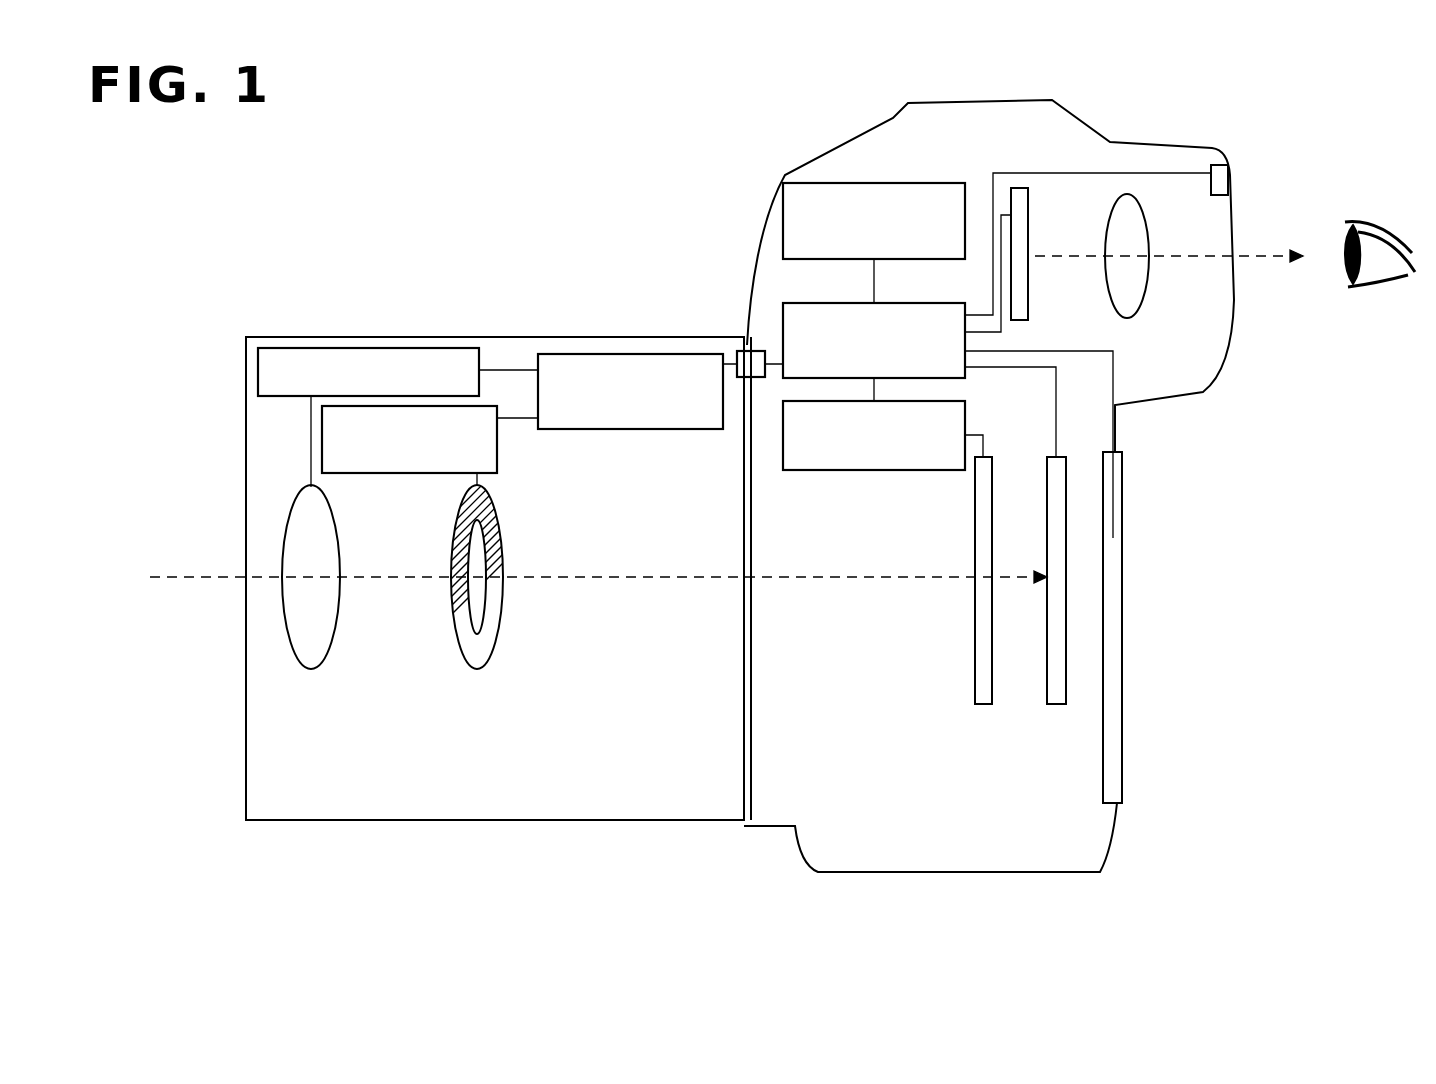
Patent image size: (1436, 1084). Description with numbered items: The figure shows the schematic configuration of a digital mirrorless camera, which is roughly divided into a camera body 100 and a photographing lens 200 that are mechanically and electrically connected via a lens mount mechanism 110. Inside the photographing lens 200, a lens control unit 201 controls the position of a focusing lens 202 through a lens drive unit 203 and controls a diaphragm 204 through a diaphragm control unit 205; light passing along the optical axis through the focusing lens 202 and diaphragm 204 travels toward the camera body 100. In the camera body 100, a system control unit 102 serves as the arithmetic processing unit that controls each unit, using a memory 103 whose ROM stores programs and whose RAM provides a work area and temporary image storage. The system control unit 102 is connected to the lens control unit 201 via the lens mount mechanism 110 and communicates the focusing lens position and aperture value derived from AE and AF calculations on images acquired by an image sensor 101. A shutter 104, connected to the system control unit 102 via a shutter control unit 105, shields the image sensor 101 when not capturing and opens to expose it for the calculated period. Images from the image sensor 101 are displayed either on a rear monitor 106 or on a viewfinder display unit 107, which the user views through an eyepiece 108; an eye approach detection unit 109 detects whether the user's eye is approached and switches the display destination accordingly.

The camera body 100 is at (750, 873).
The image sensor 101 is at (1055, 704).
The system control unit 102 is at (858, 303).
The memory 103 is at (845, 183).
The shutter 104 is at (975, 677).
The shutter control unit 105 is at (840, 472).
The rear monitor 106 is at (1122, 677).
The viewfinder display unit 107 is at (1020, 188).
The eyepiece 108 is at (1127, 194).
The eye approach detection unit 109 is at (1225, 167).
The lens mount mechanism 110 is at (742, 351).
The photographing lens 200 is at (740, 875).
The lens control unit 201 is at (588, 354).
The focusing lens 202 is at (311, 672).
The lens drive unit 203 is at (340, 348).
The diaphragm 204 is at (477, 672).
The diaphragm control unit 205 is at (400, 473).